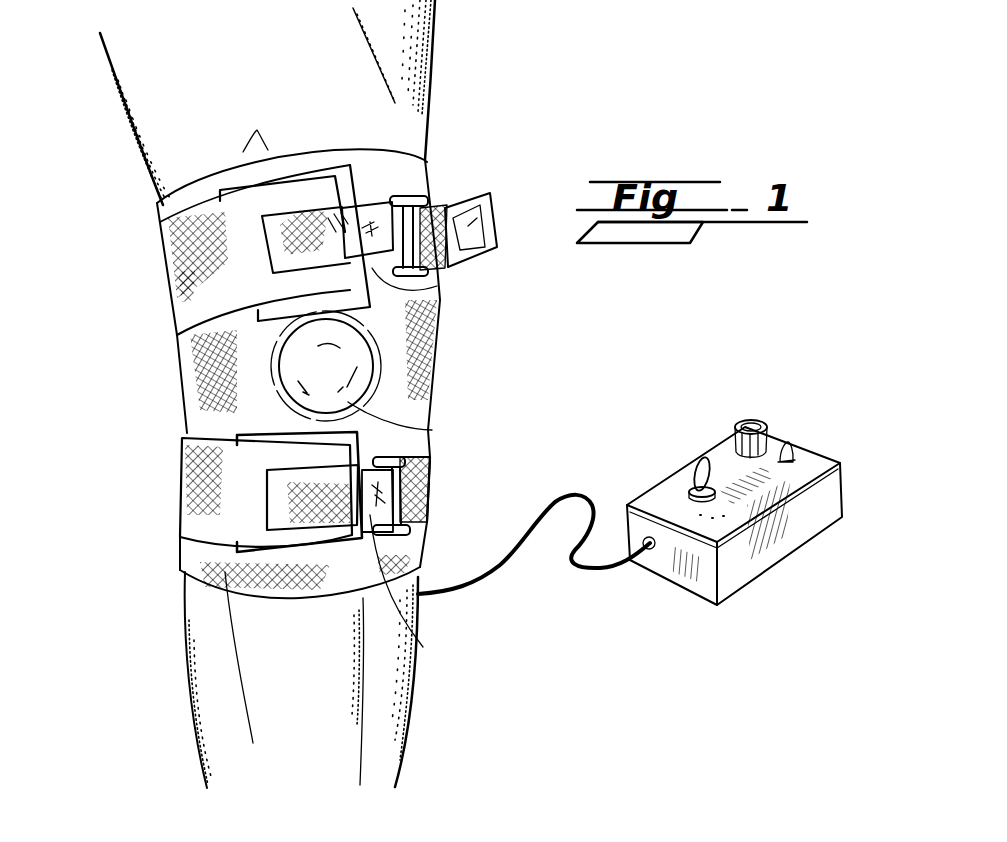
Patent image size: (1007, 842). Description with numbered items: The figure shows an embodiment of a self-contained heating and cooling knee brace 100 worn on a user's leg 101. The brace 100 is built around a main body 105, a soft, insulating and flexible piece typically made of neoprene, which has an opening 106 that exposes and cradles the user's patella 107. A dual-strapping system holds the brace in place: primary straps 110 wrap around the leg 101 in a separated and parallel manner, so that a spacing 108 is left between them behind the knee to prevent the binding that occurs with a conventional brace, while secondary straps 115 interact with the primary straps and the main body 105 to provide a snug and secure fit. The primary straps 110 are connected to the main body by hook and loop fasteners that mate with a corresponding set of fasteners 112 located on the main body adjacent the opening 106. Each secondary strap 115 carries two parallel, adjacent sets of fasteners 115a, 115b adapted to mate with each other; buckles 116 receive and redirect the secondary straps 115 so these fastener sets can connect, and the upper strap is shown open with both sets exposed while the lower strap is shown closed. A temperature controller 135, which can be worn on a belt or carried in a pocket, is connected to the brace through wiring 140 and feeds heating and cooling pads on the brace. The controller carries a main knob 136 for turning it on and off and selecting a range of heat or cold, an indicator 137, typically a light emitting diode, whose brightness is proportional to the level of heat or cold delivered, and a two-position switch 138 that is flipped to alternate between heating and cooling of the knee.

The self-contained heating and cooling knee brace 100 is at (104, 378).
The user's leg 101 is at (138, 147).
The main body 105 is at (437, 347).
The opening 106 is at (432, 430).
The patella 107 is at (350, 343).
The spacing 108 is at (180, 370).
The primary straps 110 is at (163, 258).
The fasteners 112 is at (180, 278).
The secondary straps 115 is at (395, 275).
The first set of fasteners 115a is at (437, 286).
The second set of fasteners 115b is at (493, 203).
The buckles 116 is at (403, 190).
The temperature controller 135 is at (748, 573).
The main knob 136 is at (755, 421).
The indicator 137 is at (790, 447).
The two-position switch 138 is at (695, 467).
The wiring 140 is at (500, 567).